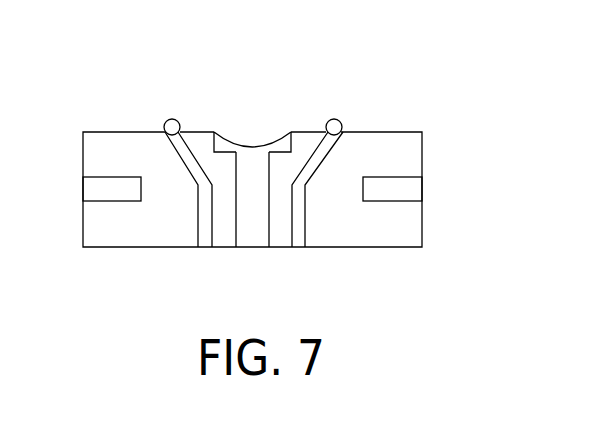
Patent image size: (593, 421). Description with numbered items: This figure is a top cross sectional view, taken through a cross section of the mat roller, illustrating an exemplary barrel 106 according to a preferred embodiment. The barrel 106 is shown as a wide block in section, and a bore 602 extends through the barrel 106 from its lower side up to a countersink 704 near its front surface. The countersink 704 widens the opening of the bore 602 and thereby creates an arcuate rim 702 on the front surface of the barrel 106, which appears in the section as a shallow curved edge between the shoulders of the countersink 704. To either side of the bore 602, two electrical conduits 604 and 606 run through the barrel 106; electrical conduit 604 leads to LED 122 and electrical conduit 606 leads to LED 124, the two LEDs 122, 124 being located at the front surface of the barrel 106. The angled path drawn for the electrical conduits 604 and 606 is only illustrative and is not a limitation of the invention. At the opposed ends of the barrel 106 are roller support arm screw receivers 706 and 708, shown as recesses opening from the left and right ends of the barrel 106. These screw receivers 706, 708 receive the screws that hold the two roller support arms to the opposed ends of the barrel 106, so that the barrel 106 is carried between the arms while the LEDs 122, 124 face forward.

The barrel 106 is at (115, 130).
The LED 122 is at (173, 118).
The LED 124 is at (333, 122).
The bore 602 is at (253, 233).
The electrical conduit 604 is at (205, 238).
The electrical conduit 606 is at (297, 237).
The arcuate rim 702 is at (225, 137).
The countersink 704 is at (280, 142).
The roller support arm screw receiver 706 is at (95, 190).
The roller support arm screw receiver 708 is at (407, 188).